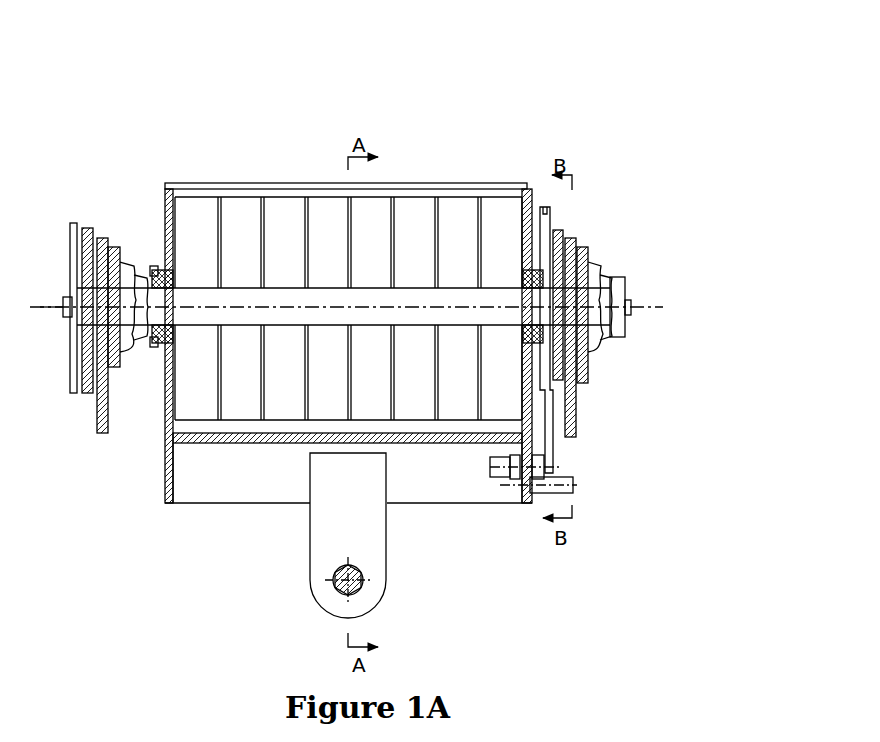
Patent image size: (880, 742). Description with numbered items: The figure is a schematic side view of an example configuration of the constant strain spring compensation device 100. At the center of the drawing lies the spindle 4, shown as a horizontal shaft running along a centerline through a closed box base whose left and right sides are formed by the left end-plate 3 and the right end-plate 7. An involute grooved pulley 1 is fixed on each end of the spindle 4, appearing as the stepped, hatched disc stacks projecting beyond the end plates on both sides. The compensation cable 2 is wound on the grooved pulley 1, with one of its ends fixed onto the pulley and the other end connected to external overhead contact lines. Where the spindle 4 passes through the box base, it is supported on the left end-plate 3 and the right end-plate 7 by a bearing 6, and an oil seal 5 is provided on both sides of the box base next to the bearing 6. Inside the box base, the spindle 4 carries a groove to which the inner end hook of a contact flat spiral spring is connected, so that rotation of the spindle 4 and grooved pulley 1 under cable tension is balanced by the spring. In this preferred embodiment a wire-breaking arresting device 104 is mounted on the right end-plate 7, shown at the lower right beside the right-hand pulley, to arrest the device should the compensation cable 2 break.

The involute grooved pulley 1 is at (78, 225).
The compensation cable 2 is at (100, 236).
The left end-plate 3 is at (172, 250).
The spindle 4 is at (201, 300).
The oil seal 5 is at (158, 342).
The bearing 6 is at (170, 338).
The right end-plate 7 is at (528, 198).
The constant strain spring compensation device 100 is at (615, 192).
The wire-breaking arresting device 104 is at (565, 465).